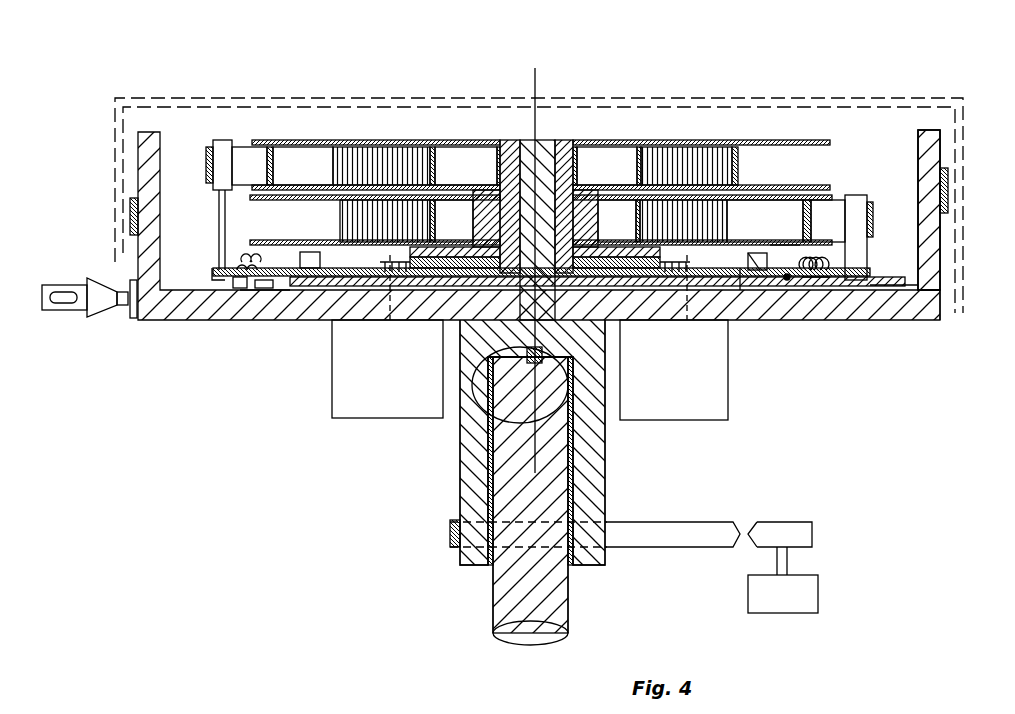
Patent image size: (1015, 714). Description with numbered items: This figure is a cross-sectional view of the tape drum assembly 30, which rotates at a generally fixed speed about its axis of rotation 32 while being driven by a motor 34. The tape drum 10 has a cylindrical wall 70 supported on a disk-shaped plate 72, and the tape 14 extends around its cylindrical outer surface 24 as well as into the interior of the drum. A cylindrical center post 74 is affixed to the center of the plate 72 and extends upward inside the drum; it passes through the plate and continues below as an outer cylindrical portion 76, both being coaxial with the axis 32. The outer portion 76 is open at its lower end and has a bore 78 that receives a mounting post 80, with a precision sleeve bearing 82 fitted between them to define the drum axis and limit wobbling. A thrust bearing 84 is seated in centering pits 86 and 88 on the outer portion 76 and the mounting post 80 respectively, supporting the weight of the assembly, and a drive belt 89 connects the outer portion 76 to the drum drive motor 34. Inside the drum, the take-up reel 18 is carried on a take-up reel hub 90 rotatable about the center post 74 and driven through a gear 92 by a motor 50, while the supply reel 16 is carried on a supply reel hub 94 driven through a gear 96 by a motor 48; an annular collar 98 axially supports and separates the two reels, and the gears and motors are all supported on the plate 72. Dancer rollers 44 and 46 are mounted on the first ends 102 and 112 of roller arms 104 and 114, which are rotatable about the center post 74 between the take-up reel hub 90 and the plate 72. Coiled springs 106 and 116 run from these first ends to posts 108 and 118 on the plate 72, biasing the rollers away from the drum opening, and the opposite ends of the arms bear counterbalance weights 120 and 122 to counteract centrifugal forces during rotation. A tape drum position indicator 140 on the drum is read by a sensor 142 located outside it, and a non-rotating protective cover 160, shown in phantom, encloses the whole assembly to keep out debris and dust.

The tape drum 10 is at (935, 151).
The tape 14 is at (240, 152).
The supply reel 16 is at (784, 248).
The take-up reel 18 is at (762, 137).
The cylindrical outer surface 24 is at (943, 232).
The tape drum assembly 30 is at (702, 70).
The axis of rotation 32 is at (535, 70).
The motor 34 is at (793, 606).
The dancer roller 44 is at (223, 140).
The dancer roller 46 is at (868, 200).
The motor 48 is at (678, 379).
The motor 50 is at (397, 379).
The cylindrical wall 70 is at (928, 265).
The plate 72 is at (172, 320).
The center post 74 is at (545, 150).
The outer cylindrical portion 76 is at (600, 440).
The bore 78 is at (575, 462).
The mounting post 80 is at (555, 598).
The sleeve bearing 82 is at (578, 498).
The thrust bearing 84 is at (530, 385).
The centering pit 86 is at (462, 390).
The centering pit 88 is at (490, 465).
The drive belt 89 is at (760, 530).
The take-up reel hub 90 is at (510, 110).
The gear 92 is at (320, 258).
The supply reel hub 94 is at (482, 205).
The gear 96 is at (690, 262).
The annular collar 98 is at (584, 195).
The first end 102 is at (215, 268).
The roller arm 104 is at (250, 292).
The coiled spring 106 is at (237, 260).
The post 108 is at (233, 286).
The first end 112 is at (940, 320).
The roller arm 114 is at (740, 292).
The coiled spring 116 is at (818, 266).
The post 118 is at (845, 287).
The counterbalance weight 120 is at (262, 288).
The counterbalance weight 122 is at (830, 257).
The tape drum position indicator 140 is at (133, 318).
The sensor 142 is at (87, 313).
The protective cover 160 is at (905, 100).